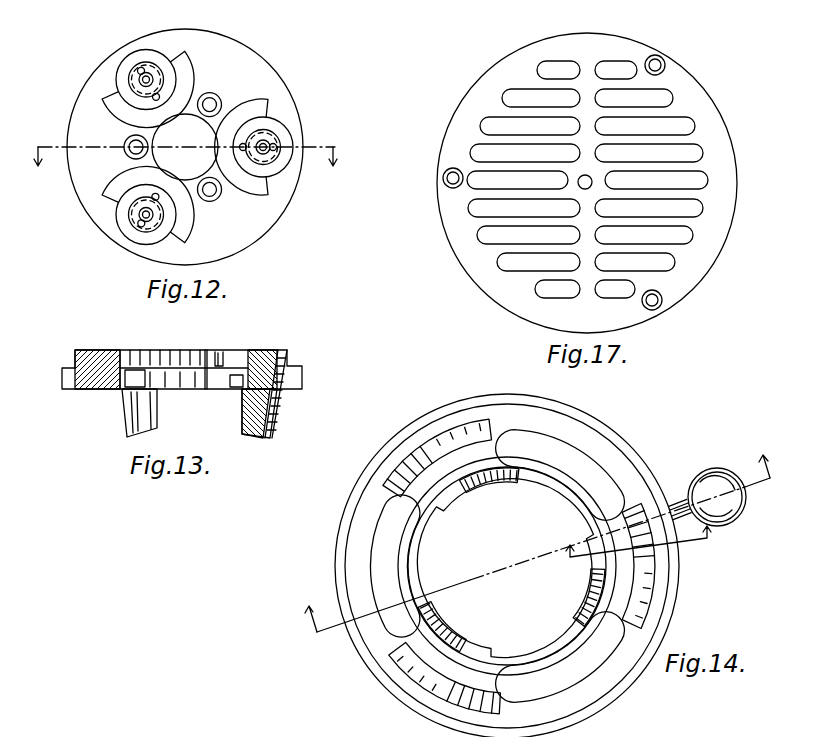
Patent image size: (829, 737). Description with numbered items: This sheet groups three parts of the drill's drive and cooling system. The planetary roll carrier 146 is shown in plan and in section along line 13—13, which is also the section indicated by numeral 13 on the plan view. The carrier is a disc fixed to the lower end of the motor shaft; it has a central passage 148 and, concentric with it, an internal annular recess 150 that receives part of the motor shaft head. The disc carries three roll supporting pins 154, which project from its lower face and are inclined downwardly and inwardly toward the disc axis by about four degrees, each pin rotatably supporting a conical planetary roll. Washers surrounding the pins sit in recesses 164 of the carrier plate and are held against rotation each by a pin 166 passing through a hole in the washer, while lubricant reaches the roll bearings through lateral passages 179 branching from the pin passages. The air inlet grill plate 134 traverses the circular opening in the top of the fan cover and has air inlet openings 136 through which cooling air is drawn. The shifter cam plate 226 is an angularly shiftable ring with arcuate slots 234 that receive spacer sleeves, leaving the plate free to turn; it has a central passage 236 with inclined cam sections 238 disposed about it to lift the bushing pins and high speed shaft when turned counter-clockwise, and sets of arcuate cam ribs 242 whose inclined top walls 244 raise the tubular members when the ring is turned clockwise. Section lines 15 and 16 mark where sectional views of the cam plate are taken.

In FIG. 12, the planetary roll carrier 146 is at (280, 95).
In FIG. 13, the planetary roll carrier 146 is at (93, 348).
In FIG. 12, the central passage 148 is at (210, 127).
In FIG. 13, the central passage 148 is at (193, 389).
In FIG. 13, the internal annular recess 150 is at (133, 352).
In FIG. 12, the roll supporting pins 154 is at (131, 77).
In FIG. 13, the roll supporting pins 154 is at (242, 417).
In FIG. 12, the recesses 164 is at (117, 82).
In FIG. 13, the recesses 164 is at (208, 355).
In FIG. 12, the pin 166 is at (159, 198).
In FIG. 13, the pin 166 is at (240, 388).
In FIG. 12, the lateral passages 179 is at (147, 72).
In FIG. 13, the lateral passages 179 is at (279, 351).
In FIG. 17, the grill plate 134 is at (477, 85).
In FIG. 17, the air inlet openings 136 is at (500, 258).
In FIG. 14, the cam plate 226 is at (337, 545).
In FIG. 14, the arcuate slots 234 is at (597, 457).
In FIG. 14, the central passage 236 is at (455, 620).
In FIG. 14, the inclined cam sections 238 is at (497, 486).
In FIG. 14, the arcuate cam ribs 242 is at (412, 455).
In FIG. 14, the inclined top walls 244 is at (445, 437).
In FIG. 12, the section line 13— 13 is at (184, 171).
In FIG. 14, the section line 15— 15 is at (532, 534).
In FIG. 14, the section line 16— 16 is at (638, 552).